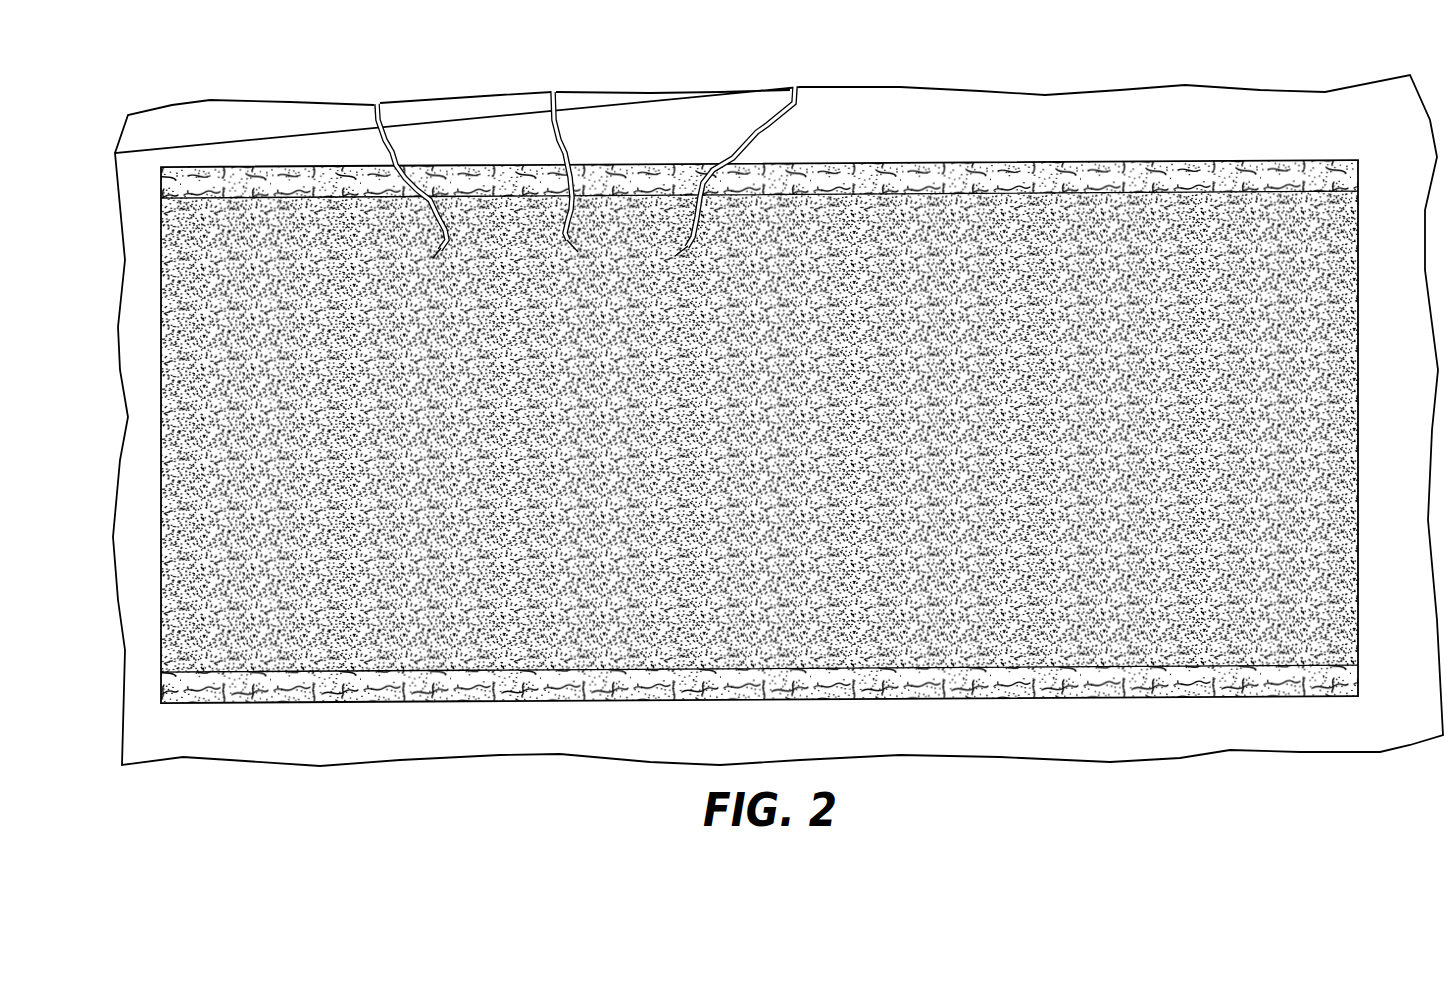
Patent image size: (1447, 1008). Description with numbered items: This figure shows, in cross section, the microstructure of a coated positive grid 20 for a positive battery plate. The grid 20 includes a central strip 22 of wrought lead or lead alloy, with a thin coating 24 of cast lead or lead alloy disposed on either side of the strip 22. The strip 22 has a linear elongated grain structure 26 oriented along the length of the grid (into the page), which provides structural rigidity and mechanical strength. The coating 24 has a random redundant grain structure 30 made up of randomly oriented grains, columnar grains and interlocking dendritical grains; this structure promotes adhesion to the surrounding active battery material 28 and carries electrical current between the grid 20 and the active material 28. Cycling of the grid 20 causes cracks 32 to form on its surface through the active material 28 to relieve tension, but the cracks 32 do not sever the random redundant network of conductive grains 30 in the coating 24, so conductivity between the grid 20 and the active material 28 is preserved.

The coated positive grid 20 is at (778, 452).
The strip 22 is at (792, 431).
The thin coating 24 is at (761, 420).
The linear elongated grain structure 26 is at (1333, 330).
The active battery material 28 is at (930, 138).
The random redundant grain structure 30 is at (880, 193).
The cracks 32 is at (392, 148).